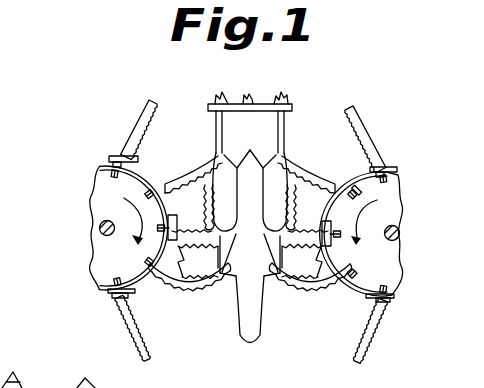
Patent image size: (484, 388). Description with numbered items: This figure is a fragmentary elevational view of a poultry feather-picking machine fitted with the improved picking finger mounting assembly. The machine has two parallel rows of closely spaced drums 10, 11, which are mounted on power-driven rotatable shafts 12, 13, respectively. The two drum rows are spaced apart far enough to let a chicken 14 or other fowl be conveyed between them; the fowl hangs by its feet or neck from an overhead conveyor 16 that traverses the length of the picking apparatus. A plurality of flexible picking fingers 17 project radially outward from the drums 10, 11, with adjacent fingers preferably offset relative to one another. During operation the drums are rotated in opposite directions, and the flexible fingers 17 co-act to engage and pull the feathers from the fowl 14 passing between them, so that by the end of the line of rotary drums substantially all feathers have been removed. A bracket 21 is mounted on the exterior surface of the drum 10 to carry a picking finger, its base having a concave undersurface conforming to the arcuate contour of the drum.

The drum 10 is at (98, 201).
The drum 11 is at (388, 204).
The power-driven rotatable shaft 12 is at (100, 235).
The power-driven rotatable shaft 13 is at (399, 234).
The chicken 14 is at (260, 258).
The overhead conveyor 16 is at (262, 108).
The flexible picking finger 17 is at (152, 131).
The bracket 21 is at (170, 175).